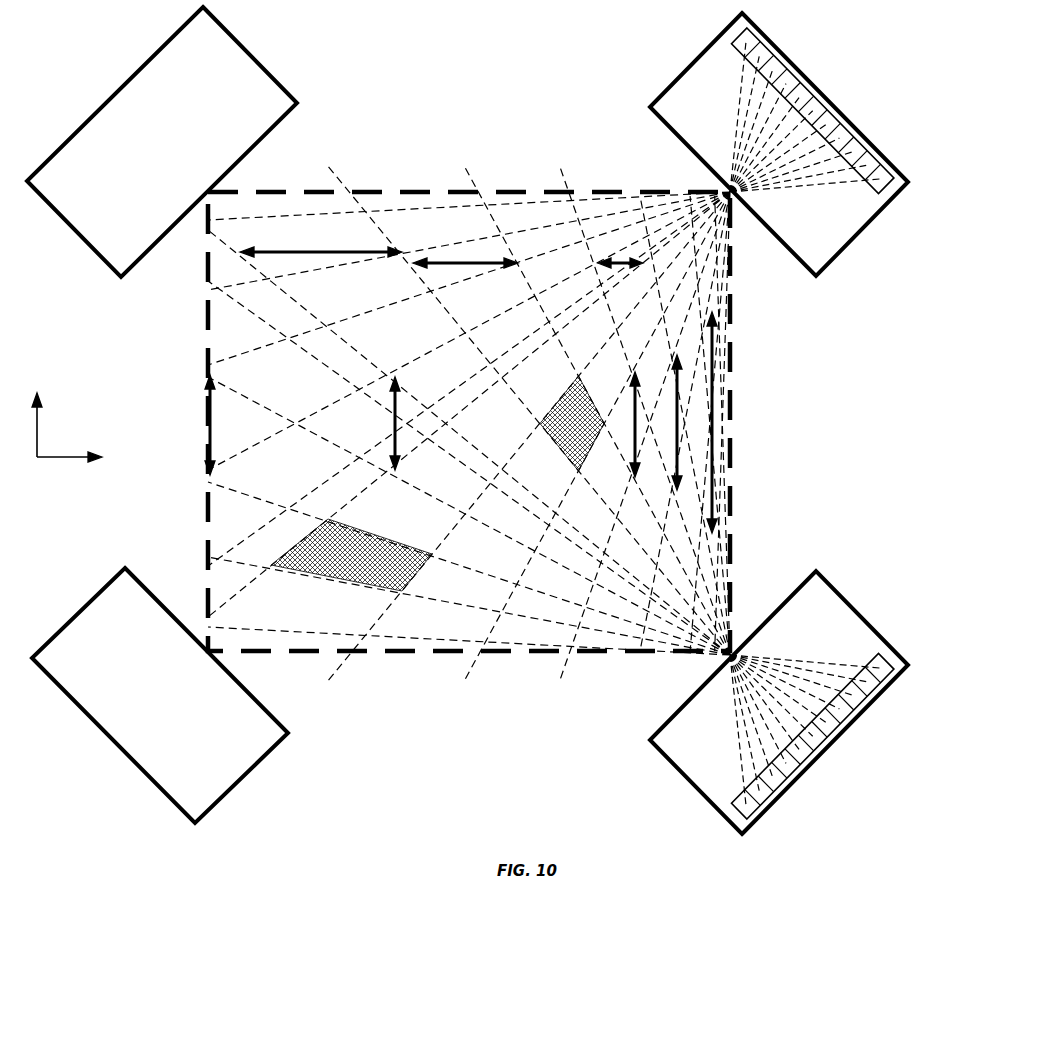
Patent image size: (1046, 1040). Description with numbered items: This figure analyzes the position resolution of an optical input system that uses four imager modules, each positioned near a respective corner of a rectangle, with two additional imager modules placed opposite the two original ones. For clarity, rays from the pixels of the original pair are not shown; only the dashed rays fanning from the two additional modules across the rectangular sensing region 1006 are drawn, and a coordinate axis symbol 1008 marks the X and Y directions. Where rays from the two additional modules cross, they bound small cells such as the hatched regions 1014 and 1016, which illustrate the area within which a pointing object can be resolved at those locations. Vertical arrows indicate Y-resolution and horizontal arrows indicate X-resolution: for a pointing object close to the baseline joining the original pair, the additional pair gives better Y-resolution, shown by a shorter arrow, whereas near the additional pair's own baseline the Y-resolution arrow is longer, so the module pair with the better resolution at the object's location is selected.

The sensing region 1006 is at (472, 177).
The coordinate axes 1008 is at (42, 458).
The detected object region 1014 is at (596, 431).
The detected object region 1016 is at (374, 558).